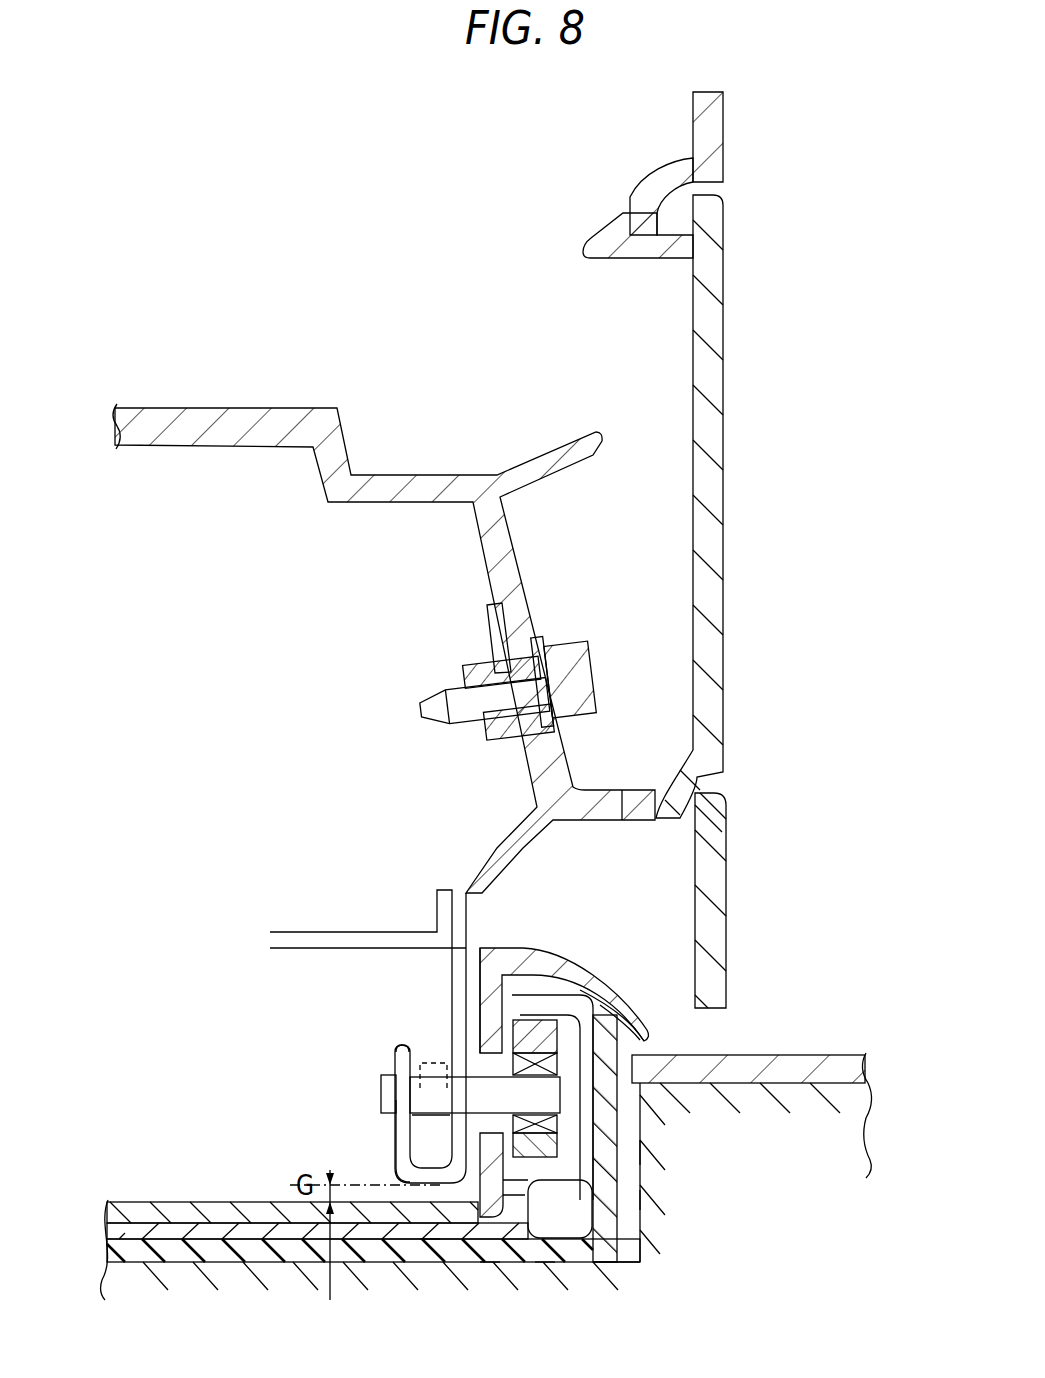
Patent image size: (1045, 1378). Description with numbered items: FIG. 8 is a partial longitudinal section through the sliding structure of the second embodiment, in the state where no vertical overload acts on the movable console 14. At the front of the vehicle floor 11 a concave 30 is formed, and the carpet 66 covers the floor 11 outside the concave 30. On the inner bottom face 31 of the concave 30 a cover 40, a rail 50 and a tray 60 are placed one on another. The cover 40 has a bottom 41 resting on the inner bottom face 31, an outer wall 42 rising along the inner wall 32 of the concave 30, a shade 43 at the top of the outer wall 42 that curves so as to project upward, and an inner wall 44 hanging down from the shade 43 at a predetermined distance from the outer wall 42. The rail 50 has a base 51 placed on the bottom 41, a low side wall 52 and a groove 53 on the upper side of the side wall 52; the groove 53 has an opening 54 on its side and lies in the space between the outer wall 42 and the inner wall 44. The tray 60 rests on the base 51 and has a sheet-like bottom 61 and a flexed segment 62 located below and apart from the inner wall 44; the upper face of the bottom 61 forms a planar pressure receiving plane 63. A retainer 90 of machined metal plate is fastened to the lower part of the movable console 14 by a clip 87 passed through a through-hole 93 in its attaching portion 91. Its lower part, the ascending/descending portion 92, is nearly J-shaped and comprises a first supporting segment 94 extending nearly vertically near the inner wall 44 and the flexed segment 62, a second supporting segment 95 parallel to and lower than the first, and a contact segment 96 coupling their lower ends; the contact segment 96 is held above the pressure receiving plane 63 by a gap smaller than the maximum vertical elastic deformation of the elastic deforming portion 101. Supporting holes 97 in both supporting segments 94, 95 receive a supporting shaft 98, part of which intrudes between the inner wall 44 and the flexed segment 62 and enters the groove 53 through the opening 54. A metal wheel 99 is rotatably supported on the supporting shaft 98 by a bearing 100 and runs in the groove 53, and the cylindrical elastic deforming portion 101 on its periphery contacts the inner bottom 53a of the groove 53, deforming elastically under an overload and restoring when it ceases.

The movable console 14 is at (723, 480).
The attaching portion 91 is at (523, 757).
The retainer 90 is at (518, 675).
The clip 87 is at (593, 677).
The through-hole 93 is at (507, 698).
The first supporting segment 94 is at (451, 968).
The second supporting segment 95 is at (396, 1050).
The ascending/descending portion 92 is at (383, 1147).
The contact segment 96 is at (435, 1168).
The wheel 99 is at (485, 1096).
The supporting shaft 98 is at (381, 1090).
The supporting holes 97 is at (432, 1068).
The cover 40 is at (564, 1058).
The shade 43 is at (565, 966).
The inner wall 44 is at (481, 972).
The groove 53 is at (593, 1000).
The elastic deforming portion 101 is at (620, 1030).
The opening 54 is at (510, 1032).
The outer wall 42 is at (652, 1043).
The concave 30 is at (672, 1141).
The inner wall 32 is at (634, 1241).
The bearing 100 is at (641, 1152).
The inner bottom 53a is at (641, 1198).
The inner bottom face 31 is at (625, 1265).
The carpet 66 is at (806, 1055).
The floor 11 is at (863, 1092).
The flexed segment 62 is at (547, 1209).
The tray 60 is at (292, 1179).
The bottom 61 is at (131, 1196).
The rail 50 is at (370, 1272).
The base 51 is at (173, 1242).
The pressure receiving plane 63 is at (432, 1215).
The bottom 41 is at (492, 1263).
The side wall 52 is at (545, 1255).